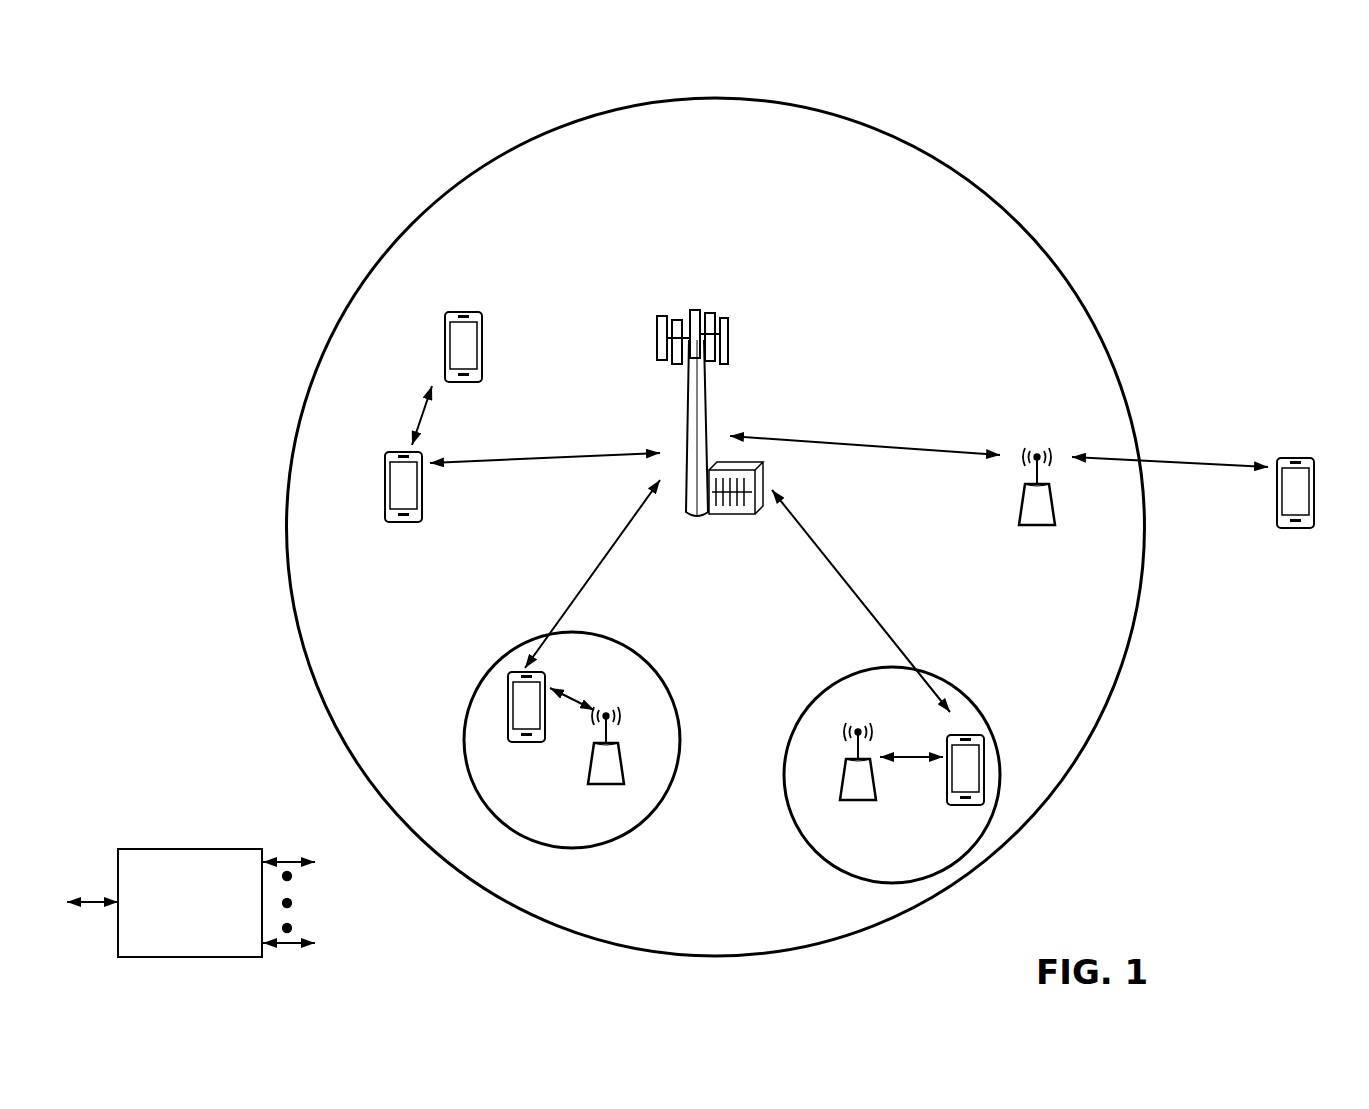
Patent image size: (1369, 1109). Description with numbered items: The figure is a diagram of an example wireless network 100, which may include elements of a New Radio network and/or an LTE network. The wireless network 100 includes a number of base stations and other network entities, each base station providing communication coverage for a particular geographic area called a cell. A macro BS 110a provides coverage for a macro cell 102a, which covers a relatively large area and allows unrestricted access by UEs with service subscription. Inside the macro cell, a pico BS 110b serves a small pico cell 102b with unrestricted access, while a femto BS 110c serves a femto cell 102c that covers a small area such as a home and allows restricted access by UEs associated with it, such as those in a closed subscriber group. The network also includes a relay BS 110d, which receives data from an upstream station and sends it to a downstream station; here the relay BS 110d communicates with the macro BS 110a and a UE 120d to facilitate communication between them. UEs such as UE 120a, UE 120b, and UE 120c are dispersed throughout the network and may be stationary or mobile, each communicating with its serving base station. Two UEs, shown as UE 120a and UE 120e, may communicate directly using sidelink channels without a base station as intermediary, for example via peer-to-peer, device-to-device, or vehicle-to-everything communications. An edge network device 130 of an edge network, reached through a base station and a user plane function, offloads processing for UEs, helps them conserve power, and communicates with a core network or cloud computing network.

The wireless network 100 is at (178, 93).
The macro cell 102a is at (996, 198).
The pico cell 102b is at (666, 675).
The femto cell 102c is at (828, 684).
The macro BS 110a is at (700, 300).
The pico BS 110b is at (626, 777).
The femto BS 110c is at (843, 792).
The relay BS 110d is at (1038, 448).
The UE 120a is at (385, 480).
The UE 120b is at (515, 744).
The UE 120c is at (948, 806).
The UE 120d is at (1298, 456).
The UE 120e is at (445, 336).
The edge network device 130 is at (188, 848).